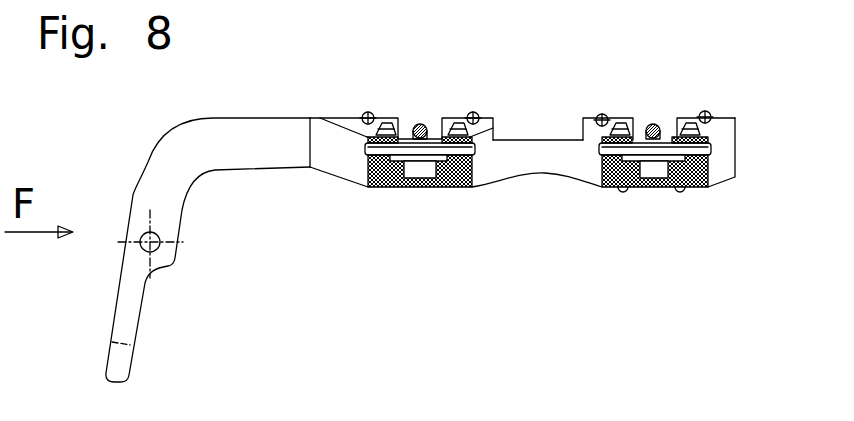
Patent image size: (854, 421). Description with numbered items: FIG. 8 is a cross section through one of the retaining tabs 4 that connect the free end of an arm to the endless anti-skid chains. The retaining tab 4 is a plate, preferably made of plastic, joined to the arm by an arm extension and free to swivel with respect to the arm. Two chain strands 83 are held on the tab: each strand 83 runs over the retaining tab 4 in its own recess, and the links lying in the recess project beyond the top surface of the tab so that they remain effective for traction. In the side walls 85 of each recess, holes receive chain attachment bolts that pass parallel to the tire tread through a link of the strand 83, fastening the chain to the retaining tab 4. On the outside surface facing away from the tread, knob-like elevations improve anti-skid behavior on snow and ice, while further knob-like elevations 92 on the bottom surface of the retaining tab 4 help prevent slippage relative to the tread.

The retaining tab 4 is at (273, 140).
The strand 83 is at (652, 125).
The side wall 85 is at (398, 135).
The knob-like elevation 92 is at (624, 190).